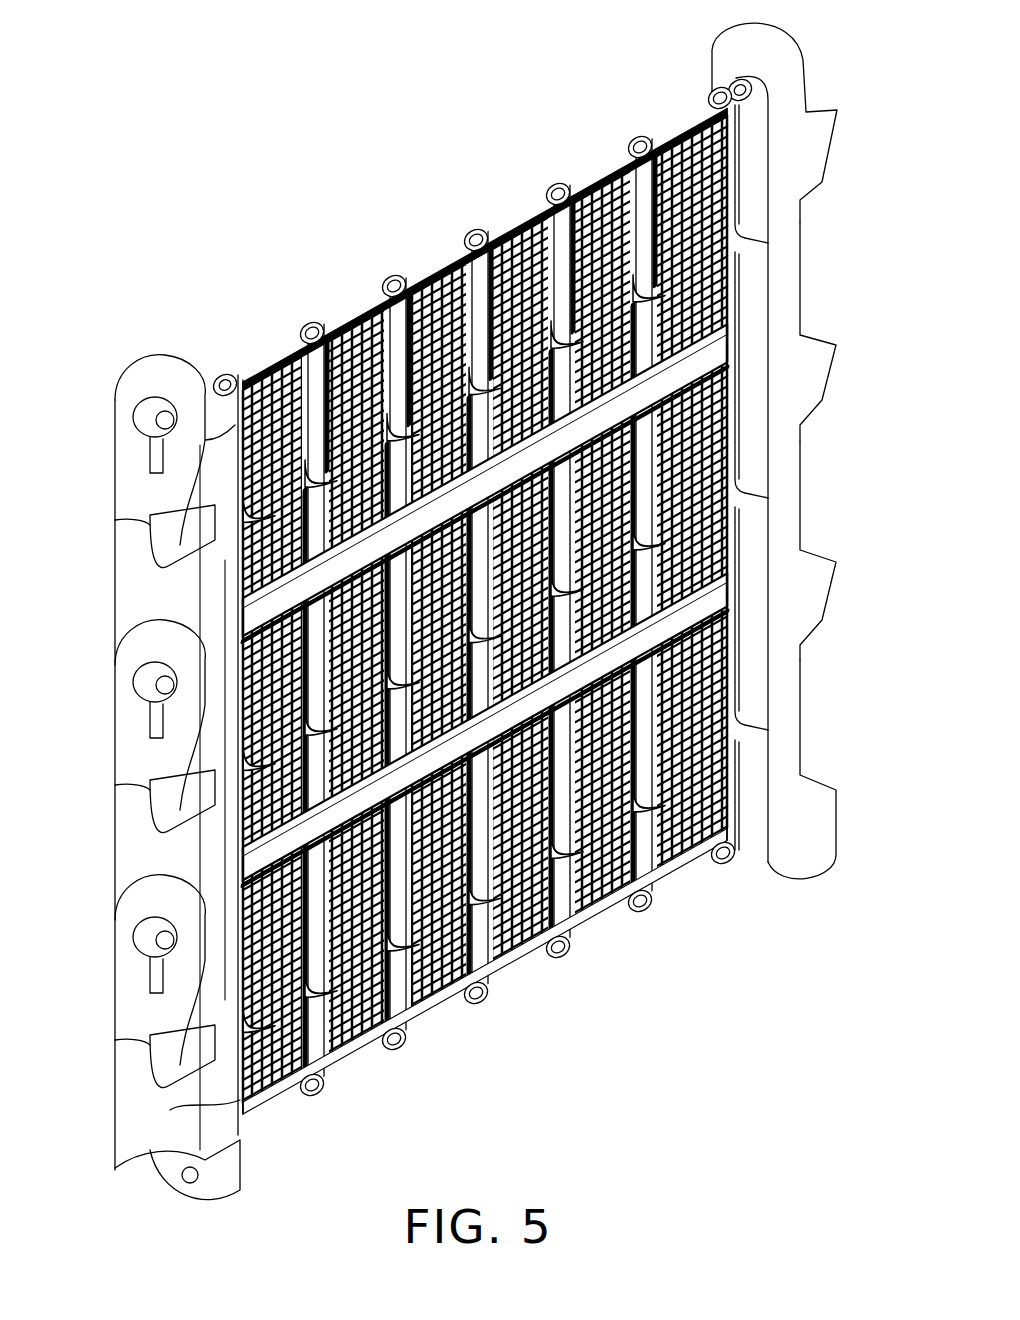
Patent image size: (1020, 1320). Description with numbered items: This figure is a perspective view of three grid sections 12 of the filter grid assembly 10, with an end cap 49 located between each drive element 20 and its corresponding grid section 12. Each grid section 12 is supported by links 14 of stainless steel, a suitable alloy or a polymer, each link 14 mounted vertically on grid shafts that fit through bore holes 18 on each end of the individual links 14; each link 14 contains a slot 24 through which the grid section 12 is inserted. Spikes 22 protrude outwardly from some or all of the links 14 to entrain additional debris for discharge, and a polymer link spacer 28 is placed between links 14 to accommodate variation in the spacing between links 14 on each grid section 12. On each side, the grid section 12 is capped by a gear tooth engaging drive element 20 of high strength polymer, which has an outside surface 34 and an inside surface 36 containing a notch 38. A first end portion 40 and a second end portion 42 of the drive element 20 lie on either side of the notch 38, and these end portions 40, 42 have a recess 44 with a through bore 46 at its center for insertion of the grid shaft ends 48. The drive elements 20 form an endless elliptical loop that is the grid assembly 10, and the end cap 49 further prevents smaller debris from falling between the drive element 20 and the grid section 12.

The filter grid assembly 10 is at (468, 622).
The grid section 12 is at (273, 377).
The link 14 is at (394, 272).
The bore hole 18 is at (560, 237).
The drive element 20 is at (115, 1030).
The spike 22 is at (497, 382).
The slot 24 is at (610, 175).
The link spacer 28 is at (697, 378).
The outside surface 34 is at (115, 762).
The inside surface 36 is at (200, 520).
The notch 38 is at (190, 553).
The first end portion 40 is at (150, 995).
The second end portion 42 is at (200, 1115).
The recess 44 is at (140, 412).
The through bore 46 is at (140, 445).
The grid shaft end 48 is at (140, 675).
The end cap 49 is at (752, 170).